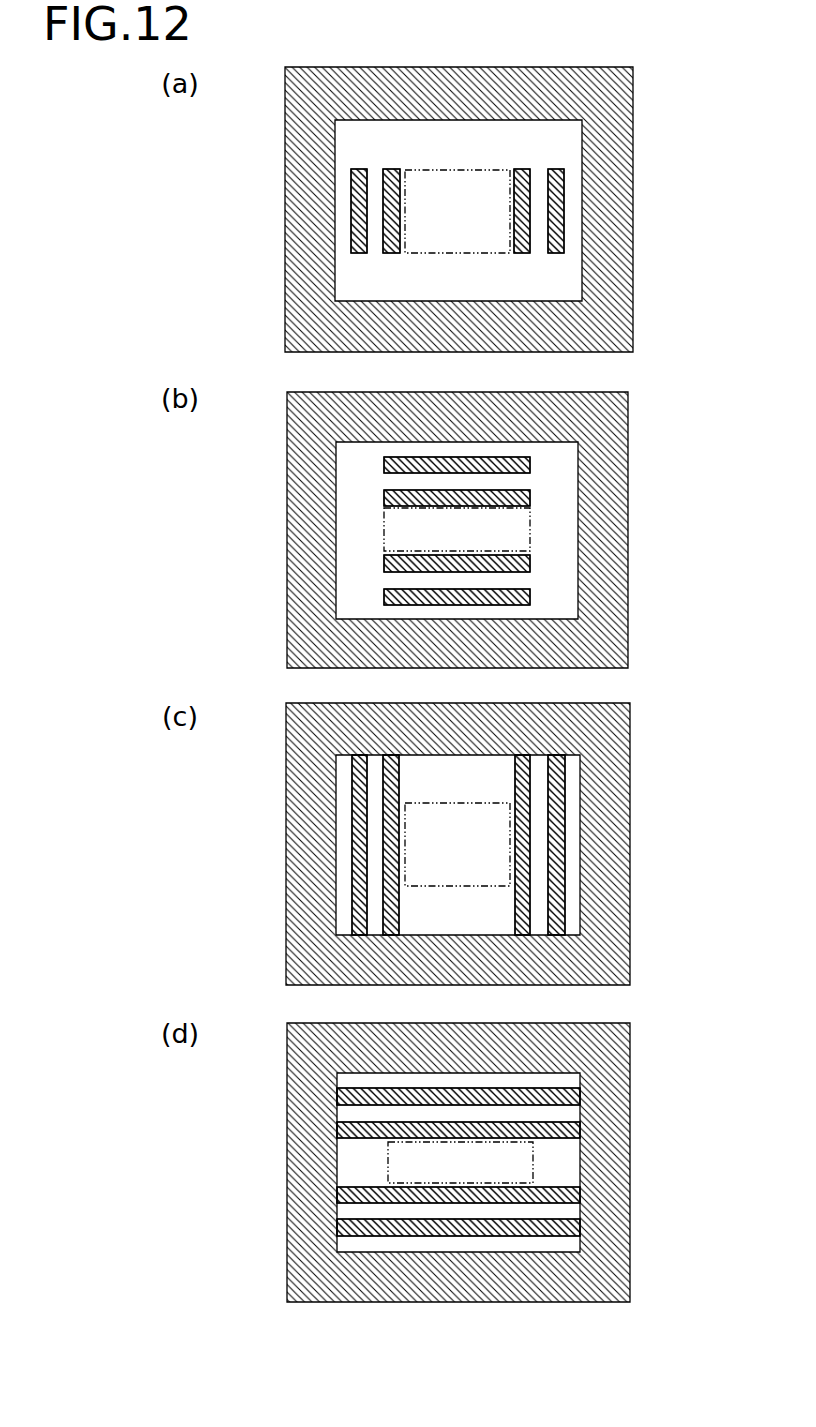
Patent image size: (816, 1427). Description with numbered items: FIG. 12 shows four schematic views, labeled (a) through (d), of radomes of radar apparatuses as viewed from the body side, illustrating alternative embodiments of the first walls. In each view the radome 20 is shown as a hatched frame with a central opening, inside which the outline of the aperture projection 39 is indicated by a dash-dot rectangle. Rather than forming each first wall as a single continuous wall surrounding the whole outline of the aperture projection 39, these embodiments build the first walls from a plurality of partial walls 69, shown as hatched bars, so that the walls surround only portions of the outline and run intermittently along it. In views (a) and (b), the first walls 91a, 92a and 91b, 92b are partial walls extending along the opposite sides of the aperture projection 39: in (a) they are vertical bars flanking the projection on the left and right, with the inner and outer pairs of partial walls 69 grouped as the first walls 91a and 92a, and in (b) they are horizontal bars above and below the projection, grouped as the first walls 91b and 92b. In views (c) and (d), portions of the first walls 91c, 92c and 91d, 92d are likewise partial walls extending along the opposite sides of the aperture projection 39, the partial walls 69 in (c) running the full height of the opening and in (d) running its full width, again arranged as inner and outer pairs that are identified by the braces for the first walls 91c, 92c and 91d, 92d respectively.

The substrate 20 is at (285, 135).
The aperture projection 39 is at (450, 173).
The partial wall 69 is at (395, 169).
The first wall 91a is at (515, 148).
The first wall 92a is at (508, 273).
The first wall 91b is at (257, 508).
The first wall 92b is at (664, 488).
The first wall 91c is at (681, 725).
The first wall 92c is at (676, 917).
The first wall 91d is at (254, 1140).
The first wall 92d is at (666, 1147).